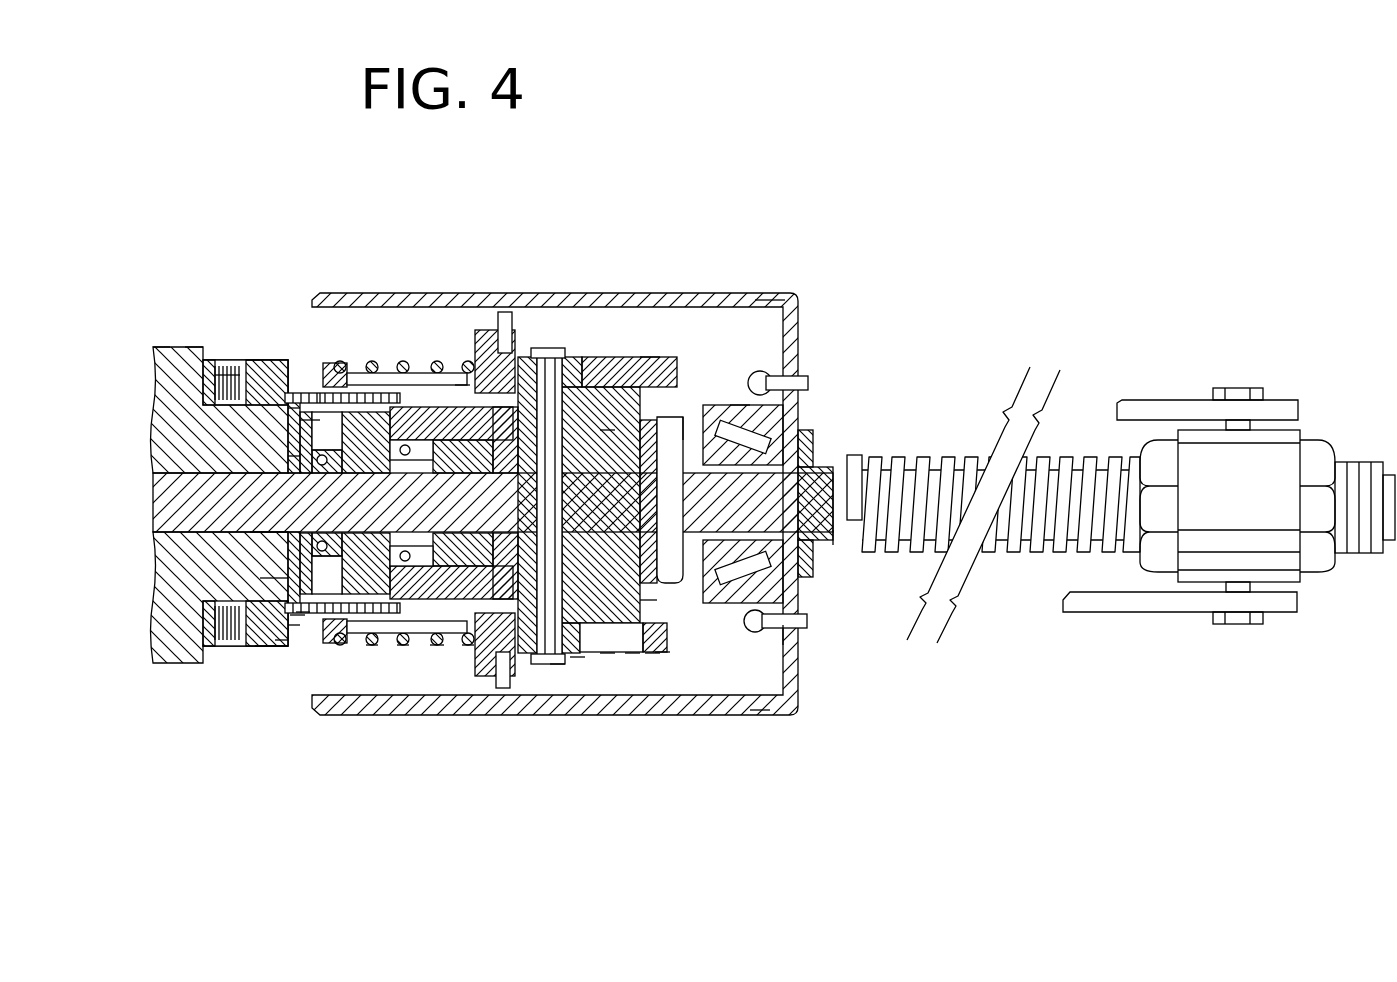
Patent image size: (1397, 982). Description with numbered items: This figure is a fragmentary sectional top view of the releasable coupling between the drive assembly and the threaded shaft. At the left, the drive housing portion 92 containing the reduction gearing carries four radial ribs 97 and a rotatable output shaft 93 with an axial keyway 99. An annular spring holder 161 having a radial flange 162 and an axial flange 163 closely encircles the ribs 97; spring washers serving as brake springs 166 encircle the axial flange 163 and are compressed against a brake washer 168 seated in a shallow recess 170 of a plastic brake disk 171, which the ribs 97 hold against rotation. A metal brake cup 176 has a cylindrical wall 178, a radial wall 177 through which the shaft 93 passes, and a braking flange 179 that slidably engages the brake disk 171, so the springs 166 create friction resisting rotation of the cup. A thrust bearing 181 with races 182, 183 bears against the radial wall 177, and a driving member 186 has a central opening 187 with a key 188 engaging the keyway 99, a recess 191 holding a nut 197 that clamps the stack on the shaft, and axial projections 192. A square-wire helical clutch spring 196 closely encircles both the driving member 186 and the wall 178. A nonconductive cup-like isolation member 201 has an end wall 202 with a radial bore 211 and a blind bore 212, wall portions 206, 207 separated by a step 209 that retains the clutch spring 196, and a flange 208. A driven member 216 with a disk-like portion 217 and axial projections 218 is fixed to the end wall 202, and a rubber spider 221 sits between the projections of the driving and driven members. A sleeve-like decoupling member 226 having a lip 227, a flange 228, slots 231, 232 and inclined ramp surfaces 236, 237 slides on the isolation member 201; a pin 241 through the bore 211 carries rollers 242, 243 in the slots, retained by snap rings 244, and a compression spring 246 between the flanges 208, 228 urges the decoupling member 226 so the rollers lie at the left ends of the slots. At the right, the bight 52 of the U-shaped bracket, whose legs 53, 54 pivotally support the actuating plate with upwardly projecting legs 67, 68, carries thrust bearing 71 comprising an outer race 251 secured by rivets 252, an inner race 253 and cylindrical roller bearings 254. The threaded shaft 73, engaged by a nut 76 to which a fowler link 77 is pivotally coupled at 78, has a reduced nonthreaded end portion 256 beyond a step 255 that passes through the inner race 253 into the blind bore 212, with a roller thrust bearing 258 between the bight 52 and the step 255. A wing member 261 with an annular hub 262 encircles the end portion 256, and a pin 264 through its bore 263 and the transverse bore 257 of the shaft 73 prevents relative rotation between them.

The bight 52 is at (793, 308).
The leg 53 is at (778, 300).
The leg 54 is at (760, 707).
The leg 67 is at (512, 677).
The leg 68 is at (505, 330).
The thrust bearing 71 is at (762, 300).
The threaded shaft 73 is at (1040, 530).
The nut 76 is at (1290, 545).
The fowler link 77 is at (1180, 612).
The pivotal coupling 78 is at (1242, 622).
The housing portion 92 is at (167, 645).
The output shaft 93 is at (175, 497).
The ribs 97 is at (270, 578).
The keyway 99 is at (265, 535).
The spring holder 161 is at (205, 408).
The annular flange 162 is at (200, 352).
The annular flange 163 is at (222, 430).
The brake springs 166 is at (162, 347).
The brake washer 168 is at (250, 357).
The annular recess 170 is at (237, 650).
The brake disk 171 is at (268, 648).
The brake cup 176 is at (215, 360).
The radial wall 177 is at (288, 625).
The cylindrical wall 178 is at (296, 615).
The braking flange 179 is at (280, 640).
The thrust bearing 181 is at (268, 357).
The race 182 is at (290, 456).
The race 183 is at (292, 408).
The driving member 186 is at (395, 398).
The central opening 187 is at (306, 420).
The key 188 is at (322, 393).
The recess 191 is at (365, 400).
The projection 192 is at (470, 645).
The clutch spring 196 is at (240, 360).
The nut 197 is at (413, 390).
The isolation member 201 is at (740, 407).
The end wall 202 is at (620, 395).
The wall portion 206 is at (438, 645).
The wall portion 207 is at (340, 645).
The annular flange 208 is at (303, 612).
The annular step 209 is at (405, 645).
The radial bore 211 is at (607, 430).
The blind bore 212 is at (625, 357).
The driven member 216 is at (510, 400).
The disk-like portion 217 is at (590, 657).
The axial projections 218 is at (432, 390).
The rubber spider 221 is at (462, 385).
The decoupling member 226 is at (653, 653).
The axial lip 227 is at (560, 660).
The annular flange 228 is at (577, 657).
The slot 231 is at (640, 357).
The slot 232 is at (633, 653).
The ramp surface 236 is at (693, 417).
The ramp surface 237 is at (675, 590).
The pin 241 is at (557, 350).
The roller 242 is at (585, 410).
The roller 243 is at (663, 652).
The snap rings 244 is at (607, 653).
The compression spring 246 is at (375, 645).
The outer race 251 is at (783, 420).
The rivets 252 is at (805, 380).
The inner race 253 is at (806, 440).
The roller bearings 254 is at (790, 635).
The step 255 is at (770, 440).
The end portion 256 is at (808, 565).
The radial bore 257 is at (835, 455).
The roller thrust bearing 258 is at (808, 578).
The wing member 261 is at (762, 375).
The annular hub 262 is at (652, 600).
The radial bore 263 is at (744, 622).
The pin 264 is at (835, 540).